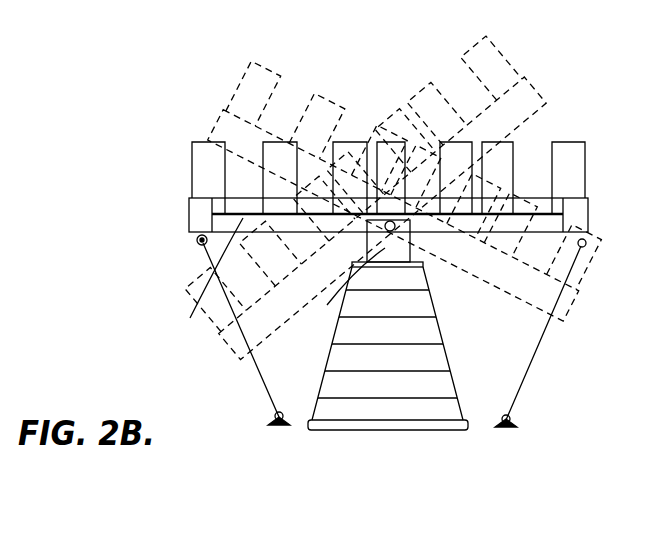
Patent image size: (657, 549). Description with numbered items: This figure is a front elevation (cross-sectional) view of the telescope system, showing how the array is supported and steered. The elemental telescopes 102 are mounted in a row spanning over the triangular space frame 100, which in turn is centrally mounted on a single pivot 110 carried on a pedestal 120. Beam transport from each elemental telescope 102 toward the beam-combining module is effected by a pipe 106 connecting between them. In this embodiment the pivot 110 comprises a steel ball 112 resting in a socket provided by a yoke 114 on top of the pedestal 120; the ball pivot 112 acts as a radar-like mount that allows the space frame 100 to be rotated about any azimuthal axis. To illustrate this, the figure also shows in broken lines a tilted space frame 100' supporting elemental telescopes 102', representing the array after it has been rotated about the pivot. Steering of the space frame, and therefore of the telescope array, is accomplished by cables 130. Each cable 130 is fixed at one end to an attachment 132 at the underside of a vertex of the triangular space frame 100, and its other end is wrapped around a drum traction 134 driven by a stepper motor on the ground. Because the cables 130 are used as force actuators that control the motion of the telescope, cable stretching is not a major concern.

The space frame 100 is at (409, 214).
The elemental telescopes 102 is at (399, 148).
The tilted space frame 100' is at (413, 218).
The elemental telescopes on tilted space frame 102' is at (407, 176).
The pipe 106 is at (200, 305).
The pivot 110 is at (430, 262).
The steel ball 112 is at (412, 243).
The yoke 114 is at (343, 290).
The pedestal 120 is at (373, 410).
The cables 130 is at (262, 375).
The attachment 132 is at (196, 244).
The drum traction 134 is at (272, 422).